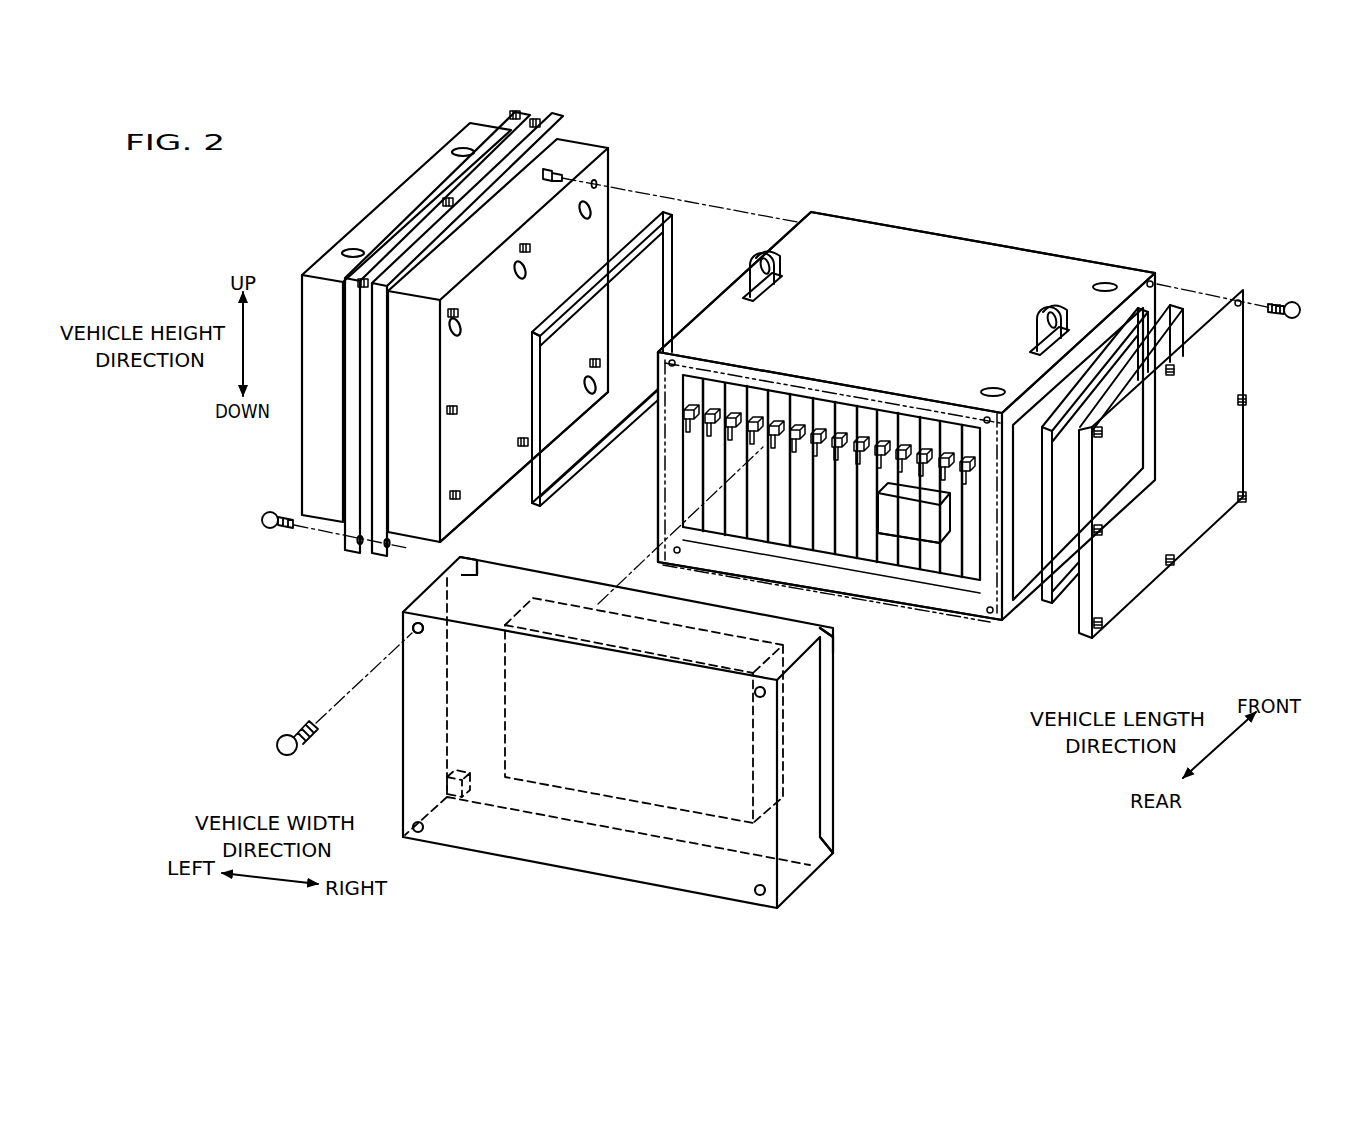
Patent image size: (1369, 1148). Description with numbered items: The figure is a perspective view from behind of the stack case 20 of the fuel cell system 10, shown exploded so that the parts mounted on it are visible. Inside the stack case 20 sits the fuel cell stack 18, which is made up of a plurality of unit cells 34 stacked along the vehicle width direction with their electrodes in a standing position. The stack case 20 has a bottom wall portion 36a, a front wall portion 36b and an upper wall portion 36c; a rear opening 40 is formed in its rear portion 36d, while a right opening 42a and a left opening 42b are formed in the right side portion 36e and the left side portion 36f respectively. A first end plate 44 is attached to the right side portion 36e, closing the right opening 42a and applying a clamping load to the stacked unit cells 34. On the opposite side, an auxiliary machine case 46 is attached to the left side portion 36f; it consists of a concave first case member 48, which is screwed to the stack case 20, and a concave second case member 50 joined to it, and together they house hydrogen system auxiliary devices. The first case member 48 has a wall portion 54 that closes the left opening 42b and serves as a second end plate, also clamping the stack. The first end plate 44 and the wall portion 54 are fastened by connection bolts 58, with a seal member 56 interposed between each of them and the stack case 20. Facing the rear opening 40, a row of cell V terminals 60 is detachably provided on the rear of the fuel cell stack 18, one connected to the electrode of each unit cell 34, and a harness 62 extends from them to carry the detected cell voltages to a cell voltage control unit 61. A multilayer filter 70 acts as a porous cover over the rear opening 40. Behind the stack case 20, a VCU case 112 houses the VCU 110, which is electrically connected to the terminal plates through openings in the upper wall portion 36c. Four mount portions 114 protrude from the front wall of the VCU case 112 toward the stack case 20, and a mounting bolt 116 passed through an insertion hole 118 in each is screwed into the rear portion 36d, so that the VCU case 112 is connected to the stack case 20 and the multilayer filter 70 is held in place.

The electrical device 10 is at (1150, 222).
The fuel cell stack 18 is at (718, 400).
The stack case 20 is at (1034, 245).
The unit cell 34 is at (848, 413).
The bottom wall portion 36a is at (873, 600).
The front wall portion 36b is at (964, 240).
The upper wall portion 36c is at (850, 240).
The rear portion 36d is at (680, 500).
The right side portion 36e is at (1026, 582).
The left side portion 36f is at (722, 296).
The rear opening 40 is at (770, 405).
The right opening 42a is at (1087, 357).
The left opening 42b is at (779, 215).
The first end plate 44 is at (1225, 452).
The auxiliary machine case 46 is at (435, 324).
The first case member 48 is at (520, 190).
The second case member 50 is at (472, 133).
The wall portion 54 is at (480, 478).
The seal member 56 is at (663, 212).
The connection bolt 58 is at (558, 163).
The cell V terminal 60 is at (932, 440).
The cell voltage control unit 61 is at (927, 548).
The harness 62 is at (935, 468).
The multilayer filter 70 is at (960, 622).
The VCU 110 is at (783, 745).
The VCU case 112 is at (420, 793).
The mount portion 114 is at (466, 563).
The mounting bolt 116 is at (280, 738).
The insertion hole 118 is at (412, 628).